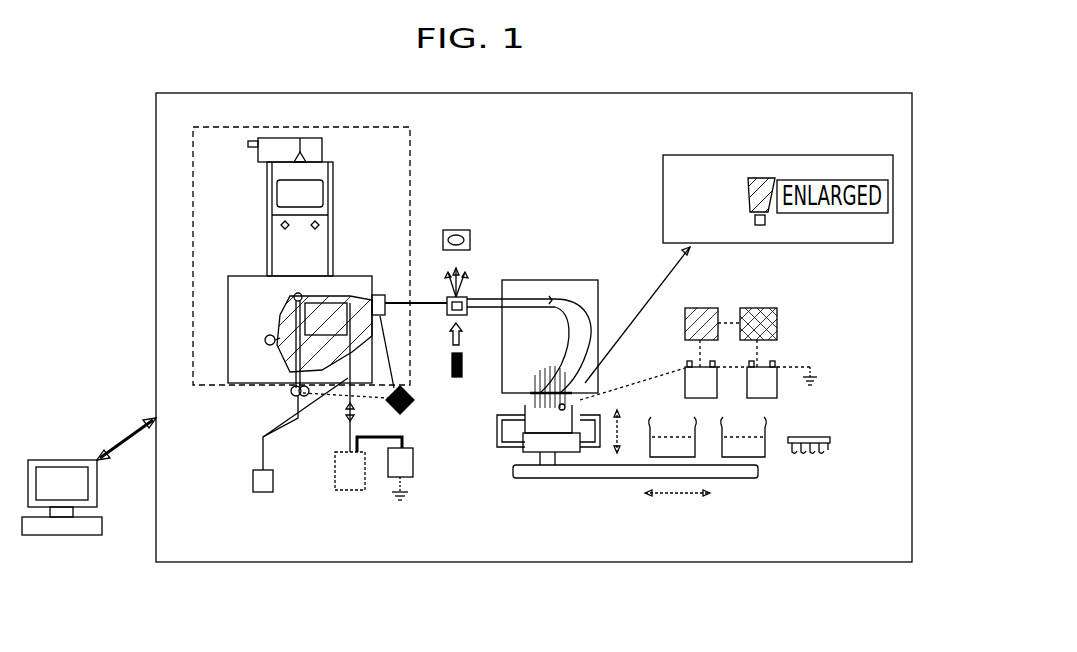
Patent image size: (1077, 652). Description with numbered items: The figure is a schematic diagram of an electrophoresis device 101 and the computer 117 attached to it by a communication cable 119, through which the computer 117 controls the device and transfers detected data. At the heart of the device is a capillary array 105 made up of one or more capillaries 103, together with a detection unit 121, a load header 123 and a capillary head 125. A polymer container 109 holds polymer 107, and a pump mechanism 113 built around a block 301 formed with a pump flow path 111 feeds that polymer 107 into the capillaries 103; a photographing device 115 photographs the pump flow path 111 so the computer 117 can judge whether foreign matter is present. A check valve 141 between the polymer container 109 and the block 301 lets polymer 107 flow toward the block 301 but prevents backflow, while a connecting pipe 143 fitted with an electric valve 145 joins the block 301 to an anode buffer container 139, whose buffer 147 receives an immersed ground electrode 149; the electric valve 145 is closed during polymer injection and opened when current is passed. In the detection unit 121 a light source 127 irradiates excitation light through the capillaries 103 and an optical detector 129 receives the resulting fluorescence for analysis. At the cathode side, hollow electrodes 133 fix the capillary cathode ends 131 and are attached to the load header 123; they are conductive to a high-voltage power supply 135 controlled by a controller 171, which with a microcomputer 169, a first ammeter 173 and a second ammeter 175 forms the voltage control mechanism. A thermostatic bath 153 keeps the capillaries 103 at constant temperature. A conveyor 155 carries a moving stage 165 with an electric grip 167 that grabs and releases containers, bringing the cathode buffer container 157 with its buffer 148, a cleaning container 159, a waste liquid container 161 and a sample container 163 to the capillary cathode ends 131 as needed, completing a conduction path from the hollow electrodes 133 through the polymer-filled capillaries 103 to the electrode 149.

The electrophoresis device 101 is at (156, 146).
The pump mechanism 113 is at (193, 190).
The pump flow path 111 is at (325, 305).
The block 301 is at (240, 283).
The check valve 141 is at (290, 391).
The connecting pipe 143 is at (263, 423).
The polymer 107 is at (253, 487).
The electric valve 145 is at (343, 412).
The buffer 147 is at (338, 476).
The electrode (GND) 149 is at (356, 490).
The anode buffer container 139 is at (338, 490).
The polymer container 109 is at (260, 492).
The second ammeter 175 is at (413, 477).
The light source 127 is at (410, 410).
The photographing device 115 is at (397, 415).
The capillary head 125 is at (378, 292).
The optical detector 129 is at (466, 230).
The detection unit 121 is at (466, 292).
The cathode buffer container 157 is at (453, 380).
The capillary 103 is at (522, 280).
The capillary array 105 is at (562, 297).
The thermostatic bath 153 is at (558, 300).
The load header 123 is at (576, 385).
The capillary cathode end 131 is at (755, 221).
The hollow electrode 133 is at (748, 190).
The microcomputer 169 is at (700, 308).
The controller 171 is at (757, 308).
The first ammeter 173 is at (688, 372).
The high-voltage power supply 135 is at (777, 390).
The cleaning container 159 is at (670, 438).
The waste liquid container 161 is at (765, 457).
The sample container 163 is at (832, 440).
The conveyor 155 is at (722, 480).
The moving stage 165 is at (528, 452).
The electric grip 167 is at (578, 465).
The buffer 148 is at (528, 437).
The computer 117 is at (48, 460).
The communication cable 119 is at (127, 448).